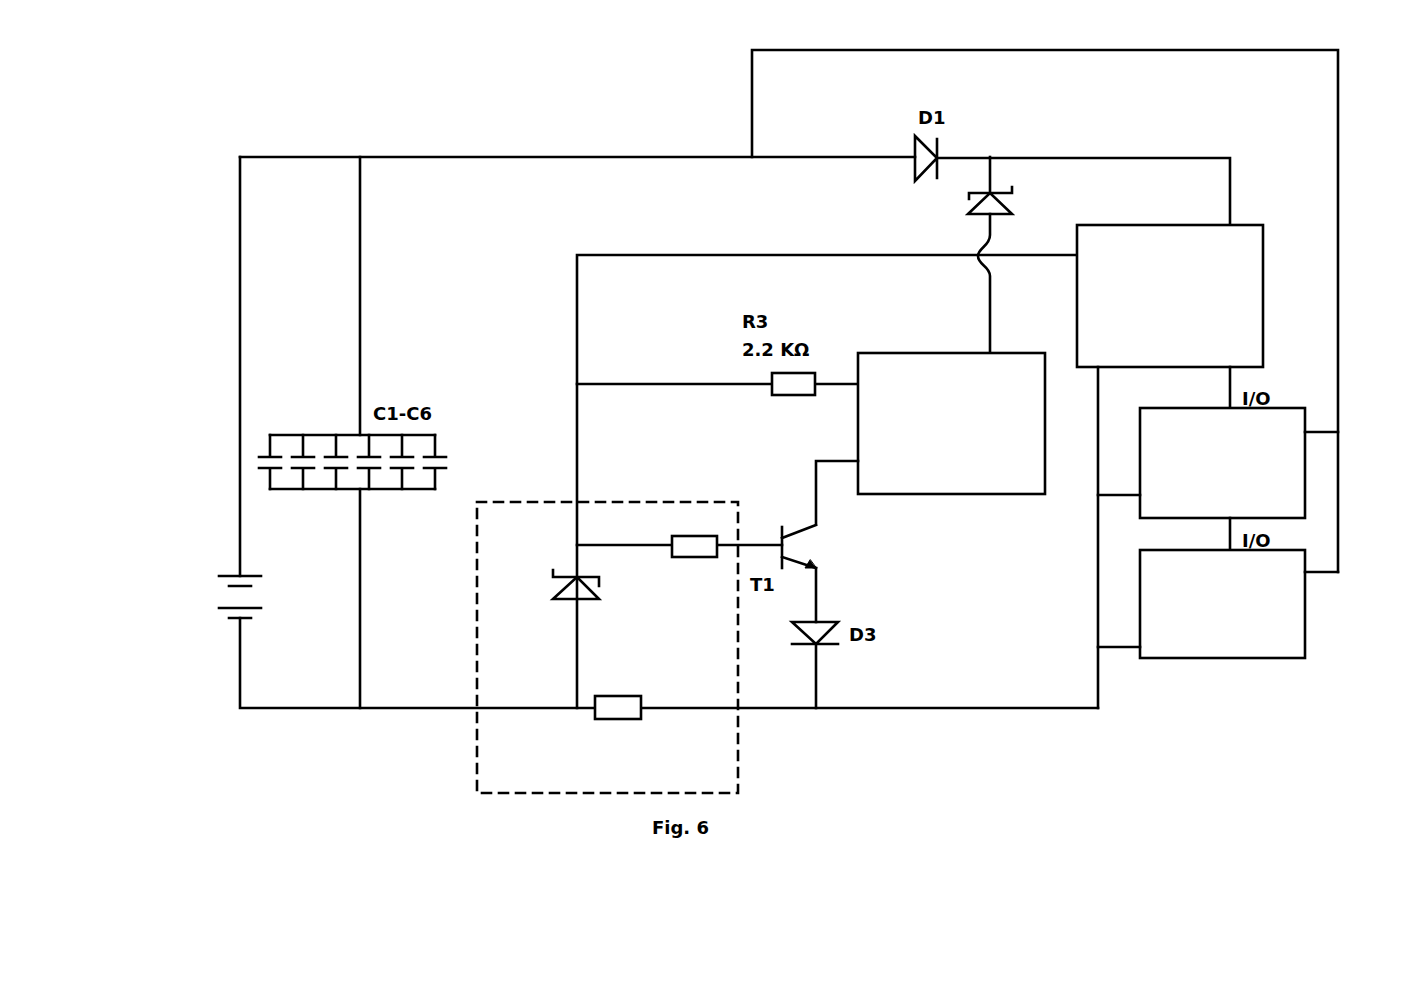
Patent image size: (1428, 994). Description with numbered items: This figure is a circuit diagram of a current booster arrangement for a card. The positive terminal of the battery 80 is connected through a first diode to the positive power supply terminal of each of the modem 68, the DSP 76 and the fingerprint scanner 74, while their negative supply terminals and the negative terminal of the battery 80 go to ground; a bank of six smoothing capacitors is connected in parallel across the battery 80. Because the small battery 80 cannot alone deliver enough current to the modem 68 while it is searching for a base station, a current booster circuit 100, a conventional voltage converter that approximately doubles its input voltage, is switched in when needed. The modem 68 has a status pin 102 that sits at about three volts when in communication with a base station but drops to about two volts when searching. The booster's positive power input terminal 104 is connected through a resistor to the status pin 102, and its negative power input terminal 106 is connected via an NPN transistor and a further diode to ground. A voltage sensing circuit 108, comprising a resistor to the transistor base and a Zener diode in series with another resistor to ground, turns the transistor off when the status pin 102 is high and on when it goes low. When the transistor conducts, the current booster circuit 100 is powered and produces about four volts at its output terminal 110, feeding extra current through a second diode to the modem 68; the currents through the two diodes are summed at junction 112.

The modem 68 is at (1237, 227).
The fingerprint scanner 74 is at (1283, 637).
The DSP 76 is at (1283, 476).
The battery 80 is at (227, 622).
The current booster circuit 100 is at (943, 424).
The status pin 102 is at (1100, 235).
The positive power input terminal 104 is at (880, 373).
The negative power input terminal 106 is at (868, 474).
The voltage sensing circuit 108 is at (474, 730).
The output terminal 110 is at (978, 365).
The junction 112 is at (990, 157).